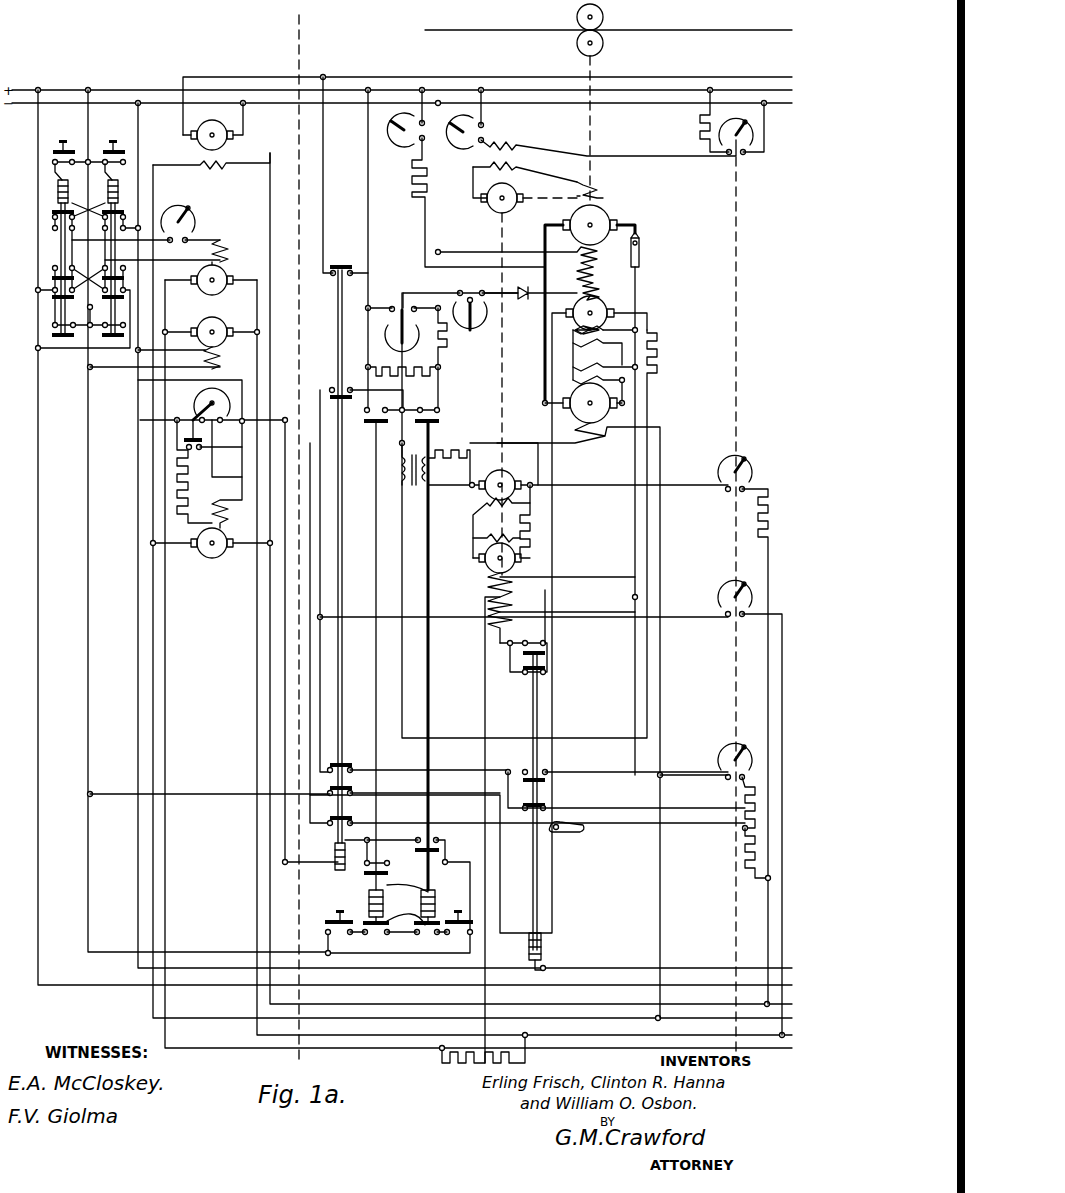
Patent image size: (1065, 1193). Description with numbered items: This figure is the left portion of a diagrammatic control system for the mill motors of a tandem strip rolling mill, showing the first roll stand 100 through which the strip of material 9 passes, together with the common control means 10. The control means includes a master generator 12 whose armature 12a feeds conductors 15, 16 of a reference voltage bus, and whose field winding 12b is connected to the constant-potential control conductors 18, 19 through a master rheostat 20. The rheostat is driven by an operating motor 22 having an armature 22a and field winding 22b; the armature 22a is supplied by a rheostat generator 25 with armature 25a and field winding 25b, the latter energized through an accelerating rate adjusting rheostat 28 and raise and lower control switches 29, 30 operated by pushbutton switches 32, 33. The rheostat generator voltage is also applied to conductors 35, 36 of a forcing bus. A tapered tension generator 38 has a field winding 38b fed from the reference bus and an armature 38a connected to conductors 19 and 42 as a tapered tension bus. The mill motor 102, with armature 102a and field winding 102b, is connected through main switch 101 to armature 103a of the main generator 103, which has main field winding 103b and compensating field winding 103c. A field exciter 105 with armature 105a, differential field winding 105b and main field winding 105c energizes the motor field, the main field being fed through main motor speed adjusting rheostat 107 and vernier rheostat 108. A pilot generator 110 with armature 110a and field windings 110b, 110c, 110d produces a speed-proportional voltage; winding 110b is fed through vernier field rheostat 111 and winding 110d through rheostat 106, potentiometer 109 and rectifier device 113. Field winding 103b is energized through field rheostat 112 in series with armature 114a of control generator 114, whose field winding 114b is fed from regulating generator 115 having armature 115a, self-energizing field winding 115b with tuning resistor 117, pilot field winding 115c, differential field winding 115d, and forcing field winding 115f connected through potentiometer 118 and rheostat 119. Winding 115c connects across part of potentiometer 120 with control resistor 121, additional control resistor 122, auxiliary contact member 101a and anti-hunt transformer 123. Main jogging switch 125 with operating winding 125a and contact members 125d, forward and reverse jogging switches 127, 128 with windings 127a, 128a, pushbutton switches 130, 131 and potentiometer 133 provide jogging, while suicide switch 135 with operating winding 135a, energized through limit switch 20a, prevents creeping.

The strip of material 9 is at (727, 30).
The common control means 10 is at (152, 45).
The master generator 12 is at (220, 581).
The armature 12a is at (222, 537).
The field winding 12b is at (221, 508).
The conductor 15 is at (160, 663).
The conductor 16 is at (257, 655).
The control conductor 18 is at (133, 88).
The control conductor 19 is at (127, 103).
The master rheostat 20 is at (191, 401).
The limit switch 20a is at (209, 471).
The operating motor 22 is at (246, 355).
The armature 22a is at (216, 322).
The field winding 22b is at (221, 367).
The rheostat generator 25 is at (250, 256).
The armature 25a is at (224, 274).
The field winding 25b is at (218, 240).
The accelerating rate adjusting rheostat 28 is at (196, 222).
The raise control switch 29 is at (56, 205).
The lower control switch 30 is at (140, 207).
The raise pushbutton switch 32 is at (72, 130).
The lower pushbutton switch 33 is at (124, 130).
The conductor 35 is at (165, 718).
The conductor 36 is at (257, 718).
The tapered tension generator 38 is at (215, 142).
The armature 38a is at (226, 110).
The field winding 38b is at (210, 166).
The conductor 42 is at (245, 80).
The roll stand 100 is at (648, 25).
The main switch 101 is at (676, 261).
The auxiliary contact member 101a is at (556, 833).
The mill motor 102 is at (648, 205).
The armature 102a is at (595, 256).
The field winding 102b is at (606, 185).
The main generator 103 is at (682, 398).
The armature 103a is at (589, 366).
The main field winding 103b is at (578, 720).
The compensating field winding 103c is at (595, 362).
The field exciter 105 is at (463, 188).
The armature 105a is at (508, 215).
The differential field winding 105b is at (514, 174).
The main field winding 105c is at (514, 148).
The rheostat 106 is at (449, 321).
The main motor speed adjusting rheostat 107 is at (754, 135).
The vernier rheostat 108 is at (452, 146).
The potentiometer 109 is at (403, 221).
The pilot generator 110 is at (625, 305).
The armature 110a is at (606, 326).
The field winding 110b is at (597, 273).
The field winding 110c is at (589, 350).
The field winding 110d is at (580, 286).
The vernier field rheostat 111 is at (400, 146).
The field rheostat 112 is at (718, 470).
The rectifier device 113 is at (524, 300).
The control generator 114 is at (488, 439).
The armature 114a is at (506, 470).
The field winding 114b is at (486, 507).
The regulating generator 115 is at (462, 559).
The armature 115a is at (484, 568).
The self-energizing field winding 115b is at (473, 538).
The pilot field winding 115c is at (508, 627).
The differential field winding 115d is at (508, 585).
The forcing field winding 115f is at (508, 604).
The tuning resistor 117 is at (533, 533).
The potentiometer 118 is at (440, 1057).
The rheostat 119 is at (718, 597).
The potentiometer 120 is at (718, 760).
The control resistor 121 is at (740, 811).
The additional control resistor 122 is at (740, 842).
The anti-hunt transformer 123 is at (402, 466).
The main jogging switch 125 is at (340, 572).
The operating winding 125a is at (334, 848).
The contact members 125d is at (348, 822).
The forward jogging switch 127 is at (430, 677).
The operating winding 127a is at (433, 898).
The reverse jogging switch 128 is at (377, 753).
The operating winding 128a is at (366, 890).
The forward pushbutton switch 130 is at (333, 914).
The reverse pushbutton switch 131 is at (465, 909).
The potentiometer 133 is at (415, 361).
The suicide switch 135 is at (540, 718).
The operating winding 135a is at (545, 940).